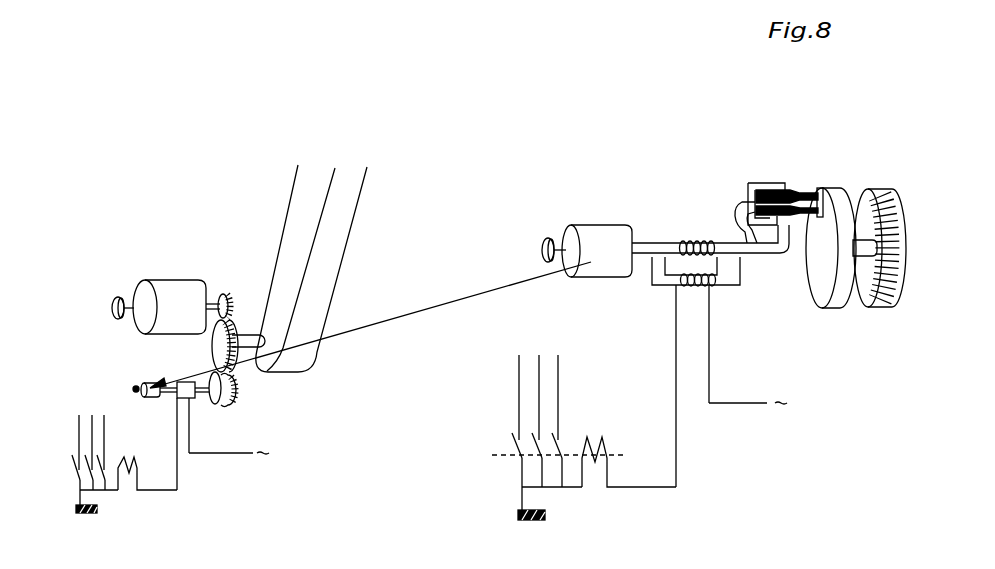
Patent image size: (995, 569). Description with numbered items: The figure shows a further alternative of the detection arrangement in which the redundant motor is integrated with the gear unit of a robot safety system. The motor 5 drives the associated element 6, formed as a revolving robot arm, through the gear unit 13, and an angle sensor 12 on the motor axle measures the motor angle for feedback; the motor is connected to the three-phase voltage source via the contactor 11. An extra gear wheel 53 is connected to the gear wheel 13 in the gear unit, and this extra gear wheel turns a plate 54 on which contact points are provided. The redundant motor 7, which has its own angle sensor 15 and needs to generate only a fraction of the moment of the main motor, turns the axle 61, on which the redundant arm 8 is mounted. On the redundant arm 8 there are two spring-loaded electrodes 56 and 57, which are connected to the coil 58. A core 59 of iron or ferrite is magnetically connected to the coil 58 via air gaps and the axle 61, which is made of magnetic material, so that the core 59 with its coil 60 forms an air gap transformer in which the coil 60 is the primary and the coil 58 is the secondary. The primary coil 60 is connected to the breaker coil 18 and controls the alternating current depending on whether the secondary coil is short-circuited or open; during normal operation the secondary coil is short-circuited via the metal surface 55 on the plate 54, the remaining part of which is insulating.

The motor 5 is at (180, 281).
The element 6 is at (338, 234).
The redundant motor 7 is at (143, 384).
The redundant arm 8 is at (212, 376).
The contactor 11 is at (76, 486).
The angle sensor 12 is at (121, 297).
The gear unit 13 is at (236, 320).
The angle sensor 15 is at (133, 389).
The coil 18 is at (139, 464).
The extra gear wheel 53 is at (238, 393).
The plate 54 is at (213, 405).
The metal surface 55 is at (830, 200).
The spring-loaded electrode 56 is at (800, 190).
The spring-loaded electrode 57 is at (818, 188).
The coil 58 is at (690, 242).
The core 59 is at (740, 268).
The primary coil 60 is at (693, 287).
The axle 61 is at (647, 244).